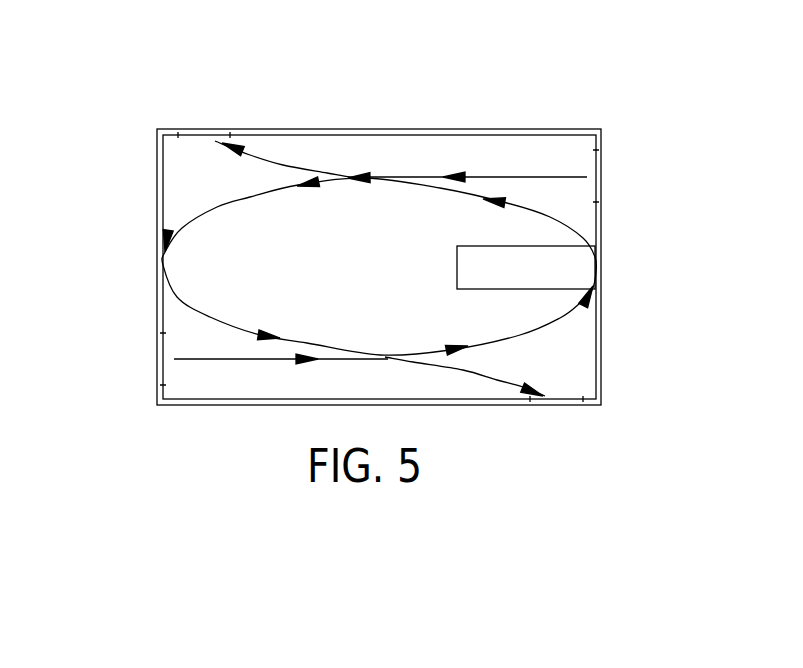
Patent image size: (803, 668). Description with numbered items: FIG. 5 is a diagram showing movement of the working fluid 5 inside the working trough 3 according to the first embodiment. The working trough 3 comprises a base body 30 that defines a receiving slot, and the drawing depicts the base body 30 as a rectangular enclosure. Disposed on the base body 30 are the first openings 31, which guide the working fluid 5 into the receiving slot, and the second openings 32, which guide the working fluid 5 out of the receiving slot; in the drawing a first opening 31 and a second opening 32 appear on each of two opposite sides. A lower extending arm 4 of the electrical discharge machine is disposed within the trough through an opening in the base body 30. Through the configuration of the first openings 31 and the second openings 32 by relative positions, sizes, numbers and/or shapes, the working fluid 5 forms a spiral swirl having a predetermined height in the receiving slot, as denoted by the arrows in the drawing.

The working trough 3 is at (604, 54).
The base body 30 is at (569, 131).
The first opening 31 is at (602, 172).
The second opening 32 is at (201, 131).
The lower extending arm 4 is at (568, 273).
The working fluid 5 is at (408, 155).